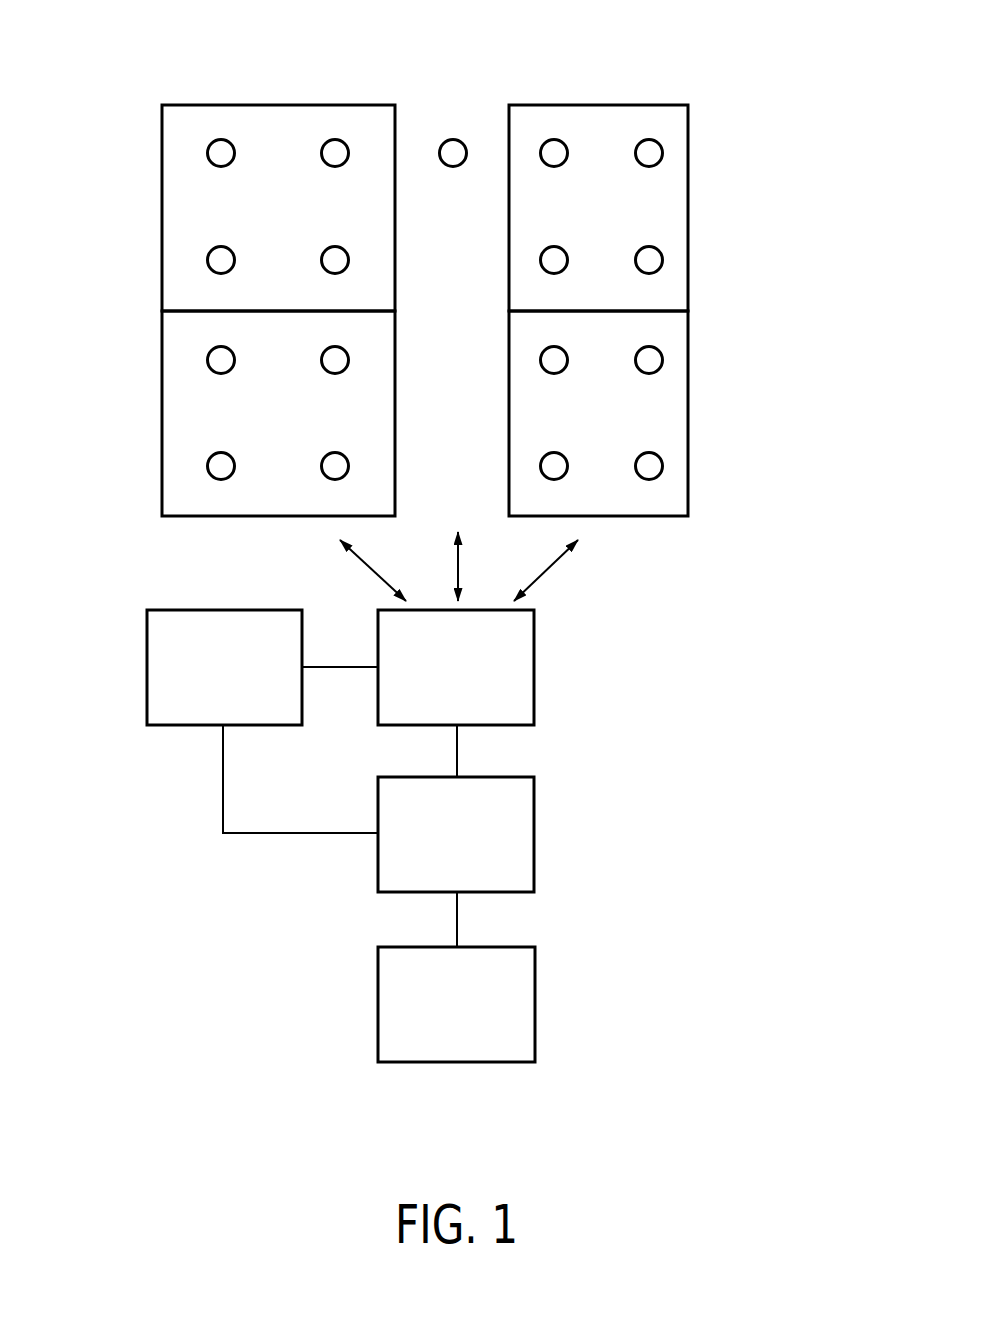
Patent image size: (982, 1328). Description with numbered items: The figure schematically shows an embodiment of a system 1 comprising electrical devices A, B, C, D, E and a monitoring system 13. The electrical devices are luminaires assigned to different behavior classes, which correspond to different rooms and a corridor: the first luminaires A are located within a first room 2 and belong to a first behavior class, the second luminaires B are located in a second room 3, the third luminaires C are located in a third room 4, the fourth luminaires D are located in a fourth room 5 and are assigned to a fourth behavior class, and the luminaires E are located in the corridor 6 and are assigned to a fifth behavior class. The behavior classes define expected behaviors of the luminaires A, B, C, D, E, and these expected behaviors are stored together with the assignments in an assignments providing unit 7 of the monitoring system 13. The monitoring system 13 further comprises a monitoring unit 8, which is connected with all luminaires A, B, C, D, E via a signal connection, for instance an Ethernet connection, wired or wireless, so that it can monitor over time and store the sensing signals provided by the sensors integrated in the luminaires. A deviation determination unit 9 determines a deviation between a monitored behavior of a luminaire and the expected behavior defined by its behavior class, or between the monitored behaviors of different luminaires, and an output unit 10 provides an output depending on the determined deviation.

The system 1 is at (696, 623).
The first room 2 is at (297, 221).
The second room 3 is at (297, 432).
The third room 4 is at (618, 221).
The fourth room 5 is at (618, 432).
The corridor 6 is at (440, 423).
The assignments providing unit 7 is at (147, 667).
The monitoring unit 8 is at (534, 670).
The deviation determination unit 9 is at (534, 832).
The output unit 10 is at (535, 1005).
The monitoring system 13 is at (250, 964).
The first luminaires A is at (224, 134).
The second luminaires B is at (203, 360).
The third luminaires C is at (668, 152).
The fourth luminaires D is at (668, 355).
The luminaires E is at (456, 134).